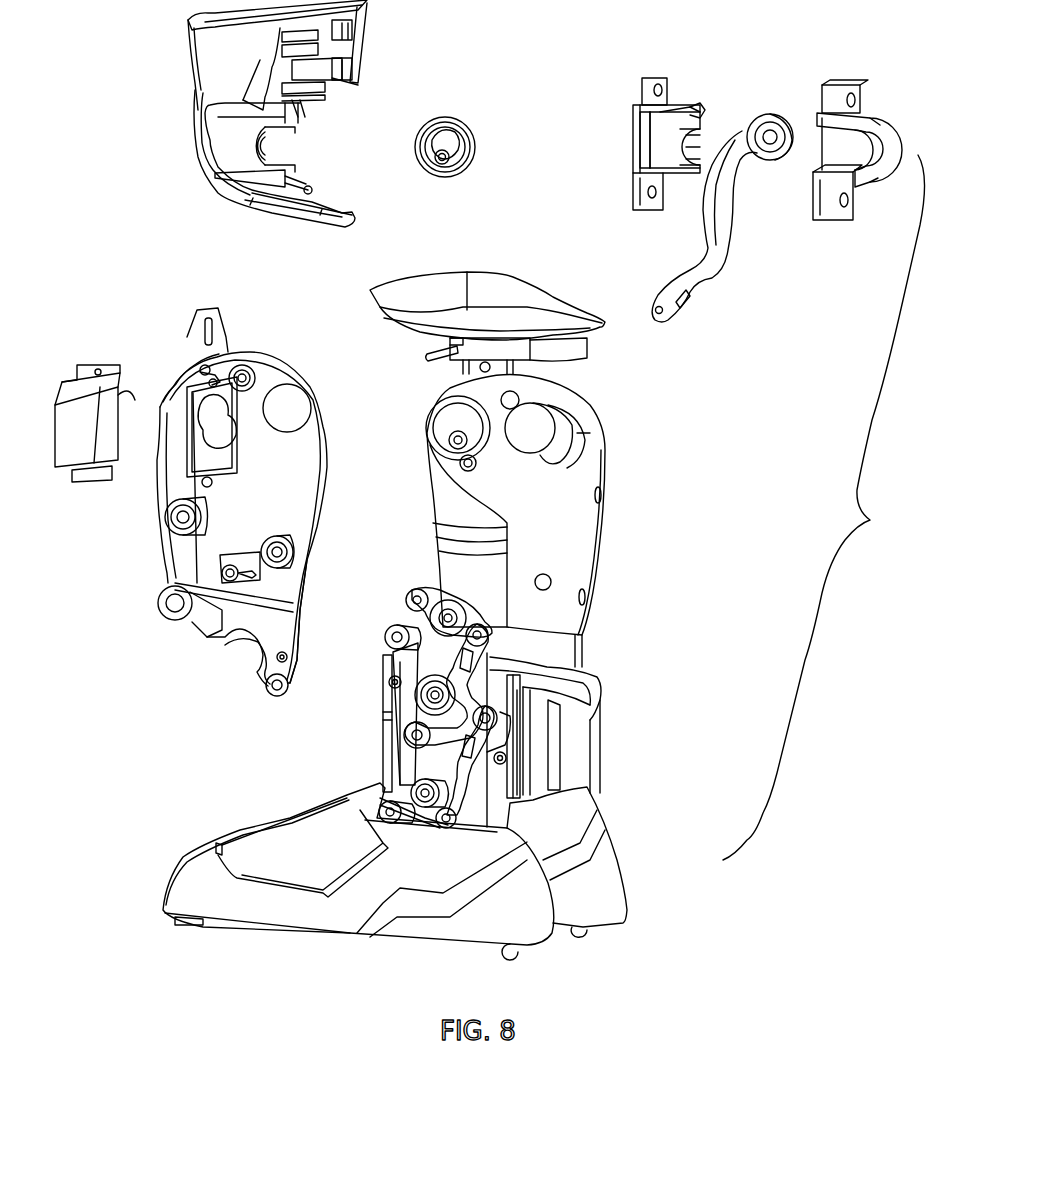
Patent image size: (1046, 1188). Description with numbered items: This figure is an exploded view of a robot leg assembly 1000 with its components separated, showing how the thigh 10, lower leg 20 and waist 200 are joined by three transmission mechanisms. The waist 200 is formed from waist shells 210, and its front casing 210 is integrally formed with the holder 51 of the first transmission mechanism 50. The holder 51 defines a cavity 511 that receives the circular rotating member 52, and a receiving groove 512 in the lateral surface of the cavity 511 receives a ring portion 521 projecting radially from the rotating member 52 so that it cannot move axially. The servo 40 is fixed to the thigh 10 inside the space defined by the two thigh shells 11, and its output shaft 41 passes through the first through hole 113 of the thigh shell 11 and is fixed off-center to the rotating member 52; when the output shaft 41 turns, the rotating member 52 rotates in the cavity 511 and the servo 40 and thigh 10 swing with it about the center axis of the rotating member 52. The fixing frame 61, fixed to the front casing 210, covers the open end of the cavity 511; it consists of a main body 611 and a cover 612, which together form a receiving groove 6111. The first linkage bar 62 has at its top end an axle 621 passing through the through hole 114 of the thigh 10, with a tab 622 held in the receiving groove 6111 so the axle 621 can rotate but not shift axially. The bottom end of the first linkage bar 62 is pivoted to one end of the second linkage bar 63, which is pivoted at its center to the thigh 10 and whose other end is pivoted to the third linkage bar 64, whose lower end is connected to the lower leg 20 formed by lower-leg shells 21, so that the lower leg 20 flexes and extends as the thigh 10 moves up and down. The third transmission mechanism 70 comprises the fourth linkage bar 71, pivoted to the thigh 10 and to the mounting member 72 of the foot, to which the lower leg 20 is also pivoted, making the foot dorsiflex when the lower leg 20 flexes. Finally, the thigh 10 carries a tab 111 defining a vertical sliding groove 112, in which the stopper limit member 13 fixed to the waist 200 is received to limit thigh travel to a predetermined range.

The leg assembly 1000 is at (555, 557).
The waist 200 is at (224, 40).
The waist shell / front casing 210 is at (232, 76).
The holder 51 is at (222, 158).
The cavity 511 is at (258, 143).
The receiving groove 512 is at (257, 165).
The first transmission mechanism 50 is at (445, 121).
The rotating member 52 is at (462, 120).
The ring portion 521 is at (474, 142).
The fixing frame 61 is at (676, 102).
The main body 611 is at (657, 135).
The receiving groove 6111 is at (700, 118).
The tab 622 is at (771, 121).
The axle 621 is at (768, 145).
The first linkage bar 62 is at (710, 281).
The cover 612 is at (887, 130).
The servo 40 is at (80, 430).
The output shaft 41 is at (125, 400).
The thigh 10 is at (241, 480).
The thigh shell 11 is at (230, 547).
The tab 111 is at (197, 350).
The sliding groove 112 is at (208, 310).
The first through hole 113 is at (228, 410).
The through hole 114 is at (287, 418).
The stopper limit member 13 is at (426, 358).
The lower leg 20 is at (514, 699).
The lower-leg shell 21 is at (505, 738).
The second linkage bar 63 is at (423, 615).
The third linkage bar 64 is at (397, 682).
The third transmission mechanism 70 is at (463, 795).
The fourth linkage bar 71 is at (507, 762).
The mounting member 72 is at (530, 843).